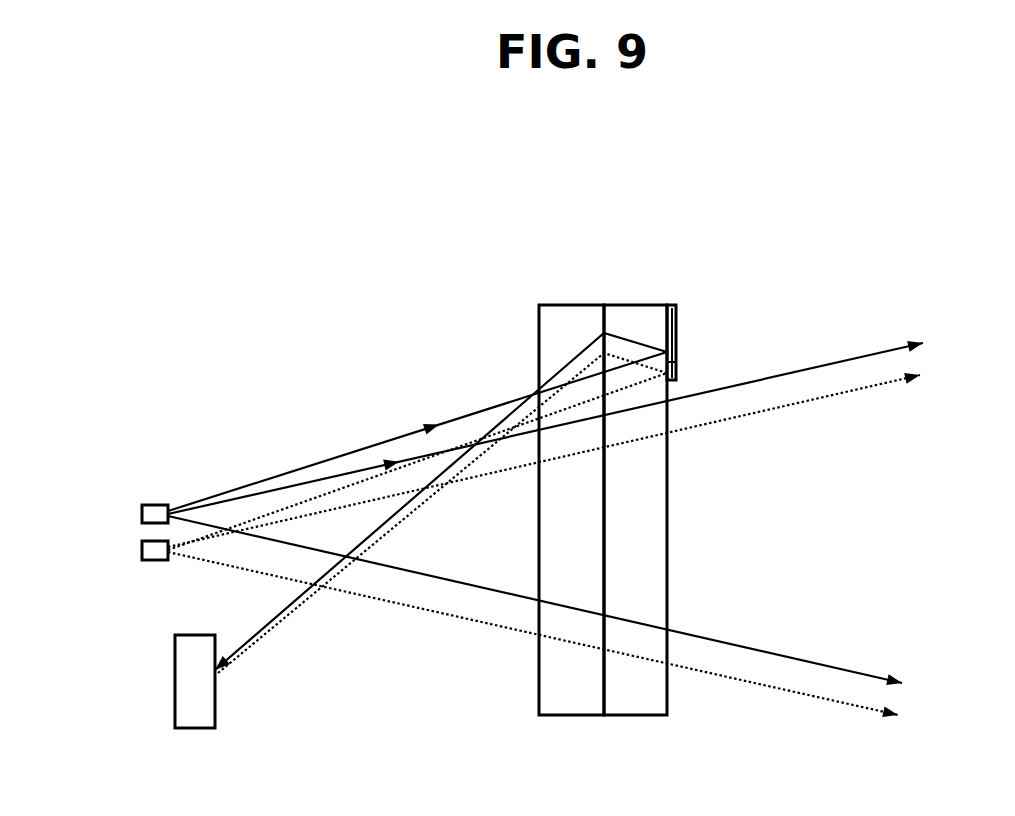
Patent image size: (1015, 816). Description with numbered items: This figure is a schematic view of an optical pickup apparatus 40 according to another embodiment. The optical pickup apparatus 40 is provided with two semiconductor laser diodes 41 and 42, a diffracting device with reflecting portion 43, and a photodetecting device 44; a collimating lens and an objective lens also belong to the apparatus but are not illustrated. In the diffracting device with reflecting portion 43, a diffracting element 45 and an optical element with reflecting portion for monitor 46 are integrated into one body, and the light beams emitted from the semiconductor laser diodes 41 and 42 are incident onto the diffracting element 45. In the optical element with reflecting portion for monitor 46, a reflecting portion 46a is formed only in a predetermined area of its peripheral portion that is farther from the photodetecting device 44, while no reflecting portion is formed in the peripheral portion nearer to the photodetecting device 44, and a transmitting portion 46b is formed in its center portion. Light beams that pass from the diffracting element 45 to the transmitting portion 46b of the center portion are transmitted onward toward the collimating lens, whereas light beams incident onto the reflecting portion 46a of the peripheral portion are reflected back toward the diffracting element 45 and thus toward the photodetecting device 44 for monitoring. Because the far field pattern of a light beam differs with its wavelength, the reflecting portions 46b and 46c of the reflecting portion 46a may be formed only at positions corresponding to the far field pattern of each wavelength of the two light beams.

The optical pickup apparatus 40 is at (916, 236).
The semiconductor laser diode 41 is at (142, 514).
The semiconductor laser diode 42 is at (142, 551).
The diffracting device with reflecting portion 43 is at (601, 246).
The photodetecting device 44 is at (175, 685).
The diffracting element 45 is at (560, 305).
The optical element with reflecting portion for monitor 46 is at (655, 305).
The reflecting portion 46a is at (676, 346).
The transmitting portion 46b is at (676, 318).
The reflecting portion 46c is at (676, 370).